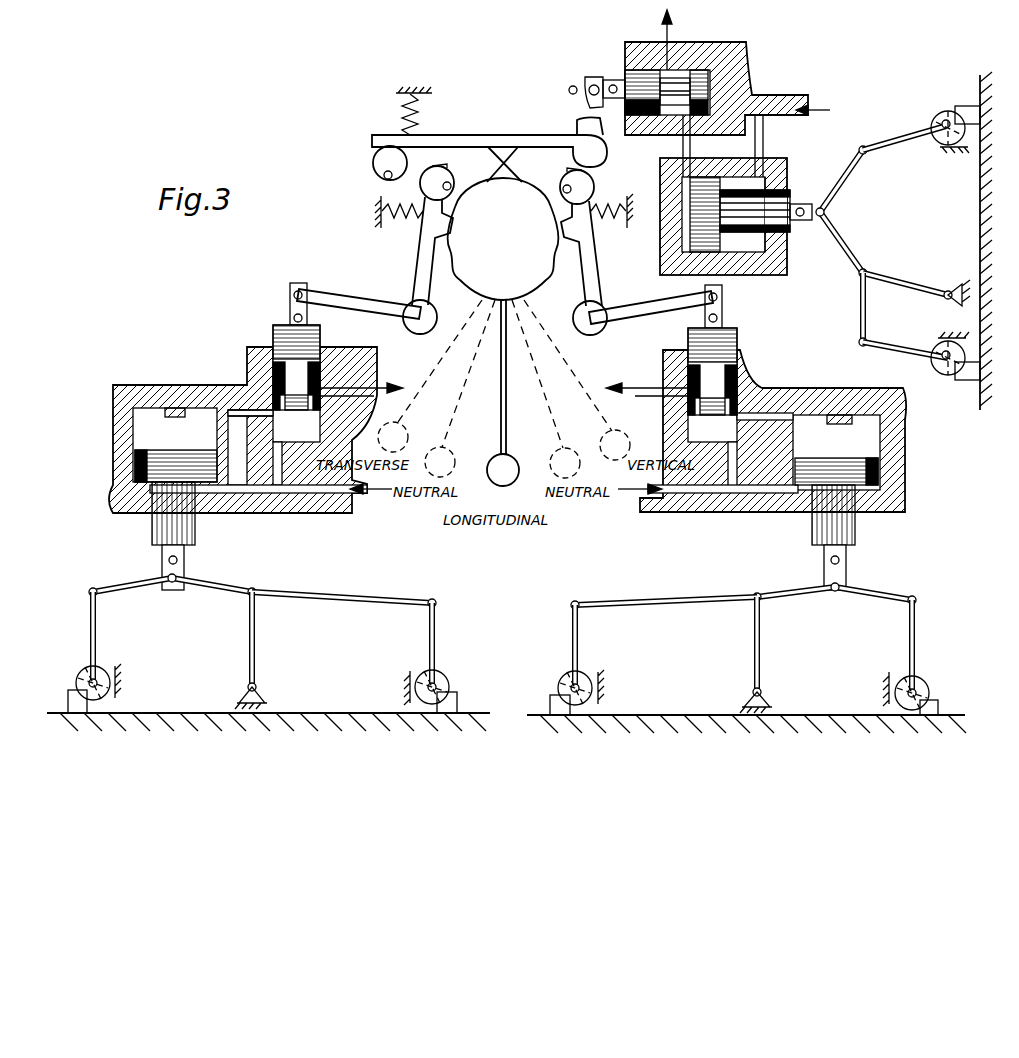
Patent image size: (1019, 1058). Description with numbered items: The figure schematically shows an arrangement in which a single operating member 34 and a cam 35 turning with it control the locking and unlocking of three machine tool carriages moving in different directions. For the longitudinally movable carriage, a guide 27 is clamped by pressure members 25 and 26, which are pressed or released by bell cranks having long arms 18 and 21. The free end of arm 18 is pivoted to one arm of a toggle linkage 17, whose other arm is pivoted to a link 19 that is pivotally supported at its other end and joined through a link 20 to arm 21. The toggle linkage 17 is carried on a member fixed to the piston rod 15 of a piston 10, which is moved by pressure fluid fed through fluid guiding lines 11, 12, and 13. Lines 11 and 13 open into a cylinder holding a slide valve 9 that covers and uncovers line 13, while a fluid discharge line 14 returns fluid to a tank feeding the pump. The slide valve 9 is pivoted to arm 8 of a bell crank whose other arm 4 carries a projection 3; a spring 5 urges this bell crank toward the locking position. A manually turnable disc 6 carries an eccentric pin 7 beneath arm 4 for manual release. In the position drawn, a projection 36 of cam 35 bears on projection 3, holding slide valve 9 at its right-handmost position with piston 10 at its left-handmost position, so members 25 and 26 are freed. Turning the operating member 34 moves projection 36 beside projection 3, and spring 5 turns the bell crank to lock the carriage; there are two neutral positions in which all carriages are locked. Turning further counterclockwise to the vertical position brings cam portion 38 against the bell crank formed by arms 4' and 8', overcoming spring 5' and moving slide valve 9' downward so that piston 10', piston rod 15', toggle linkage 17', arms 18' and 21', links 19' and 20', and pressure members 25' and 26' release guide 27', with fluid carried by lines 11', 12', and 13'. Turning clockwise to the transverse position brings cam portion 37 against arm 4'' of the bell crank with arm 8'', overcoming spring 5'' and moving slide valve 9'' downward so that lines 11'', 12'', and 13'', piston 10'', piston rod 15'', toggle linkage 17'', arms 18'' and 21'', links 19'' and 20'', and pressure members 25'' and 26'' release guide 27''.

The projection 3 is at (504, 149).
The arm 4 is at (489, 124).
The arm 4' is at (600, 251).
The arm 4'' is at (411, 249).
The spring 5 is at (404, 104).
The spring 5' is at (620, 187).
The spring 5'' is at (372, 204).
The manually turnable disc 6 is at (384, 160).
The eccentrically located pin 7 is at (385, 178).
The arm 8 is at (576, 123).
The arm 8' is at (655, 320).
The arm 8'' is at (355, 318).
The slide valve 9 is at (688, 80).
The slide valve 9' is at (745, 371).
The slide valve 9'' is at (263, 367).
The piston 10 is at (723, 233).
The piston 10' is at (805, 431).
The piston 10'' is at (213, 430).
The fluid guiding line 11 is at (778, 106).
The fluid guiding line 11' is at (708, 520).
The fluid guiding line 11'' is at (271, 517).
The fluid guiding line 12 is at (818, 112).
The fluid guiding line 12' is at (685, 470).
The fluid guiding line 12'' is at (323, 466).
The fluid guiding line 13 is at (731, 144).
The fluid guiding line 13' is at (792, 387).
The fluid guiding line 13'' is at (225, 383).
The fluid discharge line 14 is at (668, 62).
The piston rod 15 is at (797, 170).
The piston rod 15' is at (884, 524).
The piston rod 15'' is at (132, 520).
The toggle linkage 17 is at (852, 211).
The toggle linkage 17' is at (834, 623).
The toggle linkage 17'' is at (172, 616).
The long arm 18 is at (904, 86).
The long arm 18' is at (960, 646).
The long arm 18'' is at (74, 637).
The link 19 is at (916, 272).
The link 19' is at (779, 655).
The link 19'' is at (272, 650).
The link 20 is at (886, 309).
The link 20' is at (664, 628).
The link 20'' is at (344, 583).
The long arm 21 is at (905, 337).
The long arm 21' is at (602, 646).
The long arm 21'' is at (405, 645).
The pressure member 25 is at (955, 87).
The pressure member 25' is at (942, 692).
The pressure member 25'' is at (75, 688).
The pressure member 26 is at (955, 378).
The pressure member 26' is at (564, 692).
The pressure member 26'' is at (451, 691).
The guide 27 is at (961, 241).
The guide 27' is at (746, 706).
The guide 27'' is at (268, 705).
The operating member 34 is at (505, 390).
The cam 35 is at (498, 284).
The projection 36 is at (506, 179).
The cam portion 37 is at (450, 268).
The cam portion 38 is at (565, 275).